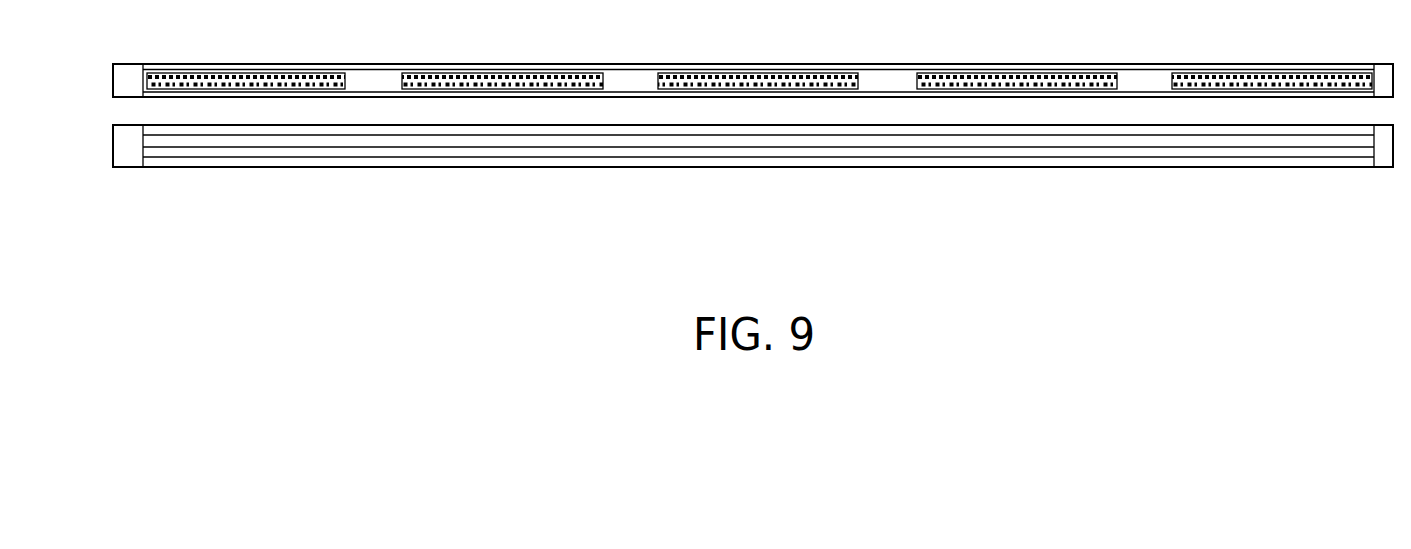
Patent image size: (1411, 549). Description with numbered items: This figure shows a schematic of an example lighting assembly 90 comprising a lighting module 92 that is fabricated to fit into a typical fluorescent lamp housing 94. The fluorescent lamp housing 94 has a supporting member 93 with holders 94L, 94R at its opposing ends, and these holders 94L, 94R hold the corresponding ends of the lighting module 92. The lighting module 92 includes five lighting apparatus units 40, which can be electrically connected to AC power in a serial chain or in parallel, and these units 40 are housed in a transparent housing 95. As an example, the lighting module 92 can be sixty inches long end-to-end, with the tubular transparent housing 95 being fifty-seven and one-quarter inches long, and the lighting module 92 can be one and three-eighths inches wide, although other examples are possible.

The lighting assembly 90 is at (962, 272).
The lighting module 92 is at (1049, 33).
The transparent housing 95 is at (1188, 64).
The lighting apparatus unit 40 is at (760, 80).
The supporting member 93 is at (598, 170).
The fluorescent lamp housing 94 is at (1081, 183).
The holder 94L is at (128, 166).
The holder 94R is at (1383, 168).